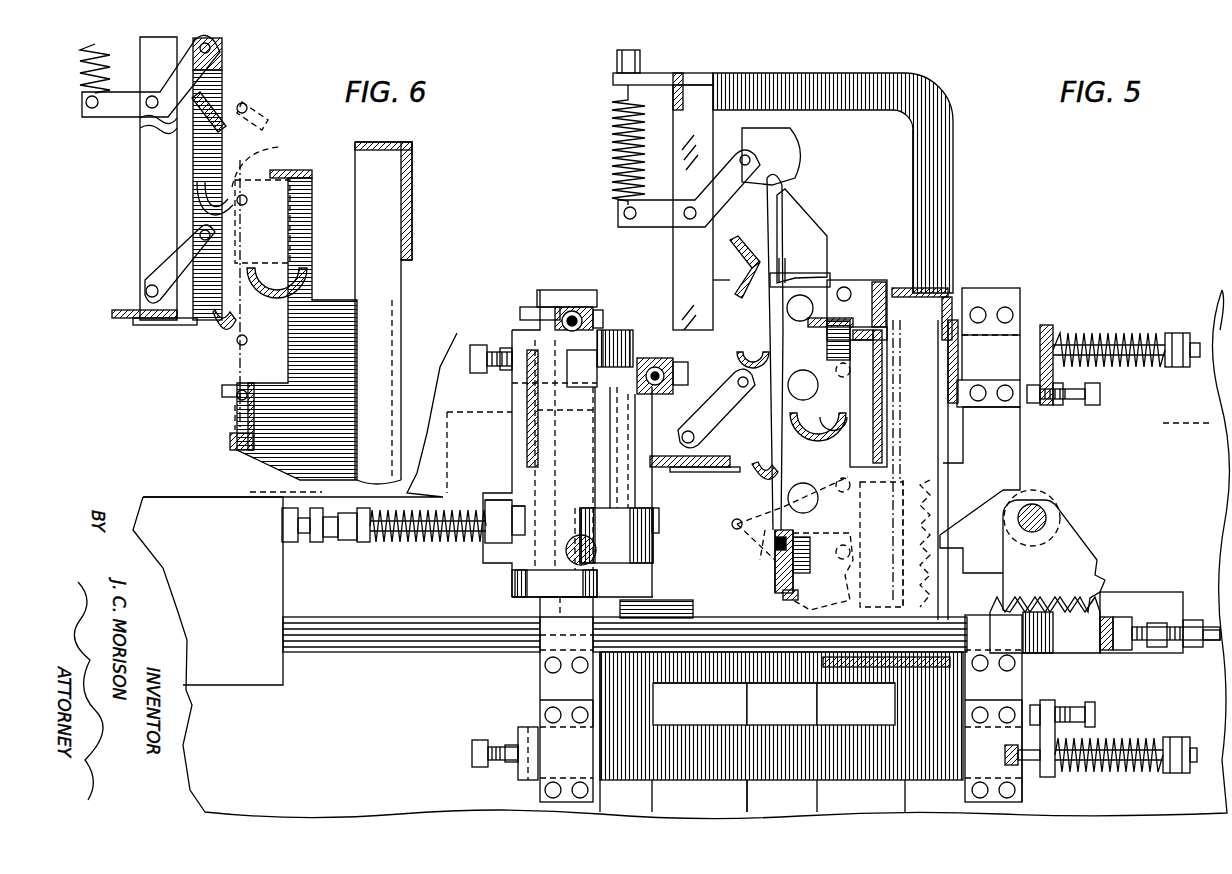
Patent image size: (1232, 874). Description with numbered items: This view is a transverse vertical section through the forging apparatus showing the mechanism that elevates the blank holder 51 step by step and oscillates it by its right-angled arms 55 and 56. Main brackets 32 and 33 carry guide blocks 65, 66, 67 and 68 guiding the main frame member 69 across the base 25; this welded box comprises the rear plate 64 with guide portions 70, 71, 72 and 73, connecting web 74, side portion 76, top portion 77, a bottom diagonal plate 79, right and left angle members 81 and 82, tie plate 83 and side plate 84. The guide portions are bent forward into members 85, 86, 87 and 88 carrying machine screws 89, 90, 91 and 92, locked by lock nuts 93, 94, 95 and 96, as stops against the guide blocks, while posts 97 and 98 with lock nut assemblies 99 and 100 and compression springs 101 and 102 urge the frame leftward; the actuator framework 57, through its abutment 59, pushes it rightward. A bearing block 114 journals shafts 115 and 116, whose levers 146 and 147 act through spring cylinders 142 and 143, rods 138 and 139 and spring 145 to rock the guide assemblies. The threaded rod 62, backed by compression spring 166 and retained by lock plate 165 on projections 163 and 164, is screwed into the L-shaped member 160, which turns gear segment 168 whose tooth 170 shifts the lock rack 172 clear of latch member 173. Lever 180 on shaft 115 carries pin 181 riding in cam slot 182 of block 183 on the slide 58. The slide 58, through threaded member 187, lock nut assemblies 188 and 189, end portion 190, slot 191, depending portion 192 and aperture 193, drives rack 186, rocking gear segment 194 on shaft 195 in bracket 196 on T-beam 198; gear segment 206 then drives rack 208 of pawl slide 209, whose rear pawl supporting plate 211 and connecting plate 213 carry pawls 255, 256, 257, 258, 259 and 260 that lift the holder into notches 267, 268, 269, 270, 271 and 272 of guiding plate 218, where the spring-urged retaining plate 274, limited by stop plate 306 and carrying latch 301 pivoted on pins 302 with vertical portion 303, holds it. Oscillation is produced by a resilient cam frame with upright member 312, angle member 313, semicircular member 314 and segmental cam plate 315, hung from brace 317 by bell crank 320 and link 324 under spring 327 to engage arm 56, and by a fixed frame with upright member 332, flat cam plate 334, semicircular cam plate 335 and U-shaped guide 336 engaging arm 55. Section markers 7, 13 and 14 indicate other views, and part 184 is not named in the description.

In FIG. 6, the section line 7 is at (250, 500).
In FIG. 5, the section line 7 is at (1212, 423).
In FIG. 5, the section line 13 is at (683, 520).
In FIG. 5, the section line 14 is at (676, 572).
In FIG. 5, the base 25 is at (1220, 300).
In FIG. 5, the main bracket 32 is at (1000, 290).
In FIG. 5, the main bracket 33 is at (545, 290).
In FIG. 6, the blank holder 51 is at (268, 135).
In FIG. 5, the blank holder 51 is at (782, 590).
In FIG. 6, the arm 55 is at (235, 418).
In FIG. 5, the arm 55 is at (786, 590).
In FIG. 6, the arm 56 is at (220, 388).
In FIG. 5, the arm 56 is at (775, 548).
In FIG. 5, the actuator framework 57 is at (250, 685).
In FIG. 5, the slide 58 is at (345, 652).
In FIG. 5, the abutment 59 is at (305, 543).
In FIG. 5, the threaded rod 62 is at (340, 540).
In FIG. 5, the main rear plate 64 is at (680, 775).
In FIG. 5, the guide block 65 is at (540, 300).
In FIG. 5, the guide block 66 is at (1010, 318).
In FIG. 5, the guide block 67 is at (550, 733).
In FIG. 5, the guide block 68 is at (1010, 770).
In FIG. 5, the main frame member 69 is at (812, 768).
In FIG. 5, the guide portion 70 is at (605, 770).
In FIG. 5, the guide portion 71 is at (960, 765).
In FIG. 5, the guide portion 72 is at (573, 429).
In FIG. 5, the guide portion 73 is at (965, 300).
In FIG. 5, the intermediate connecting web 74 is at (702, 680).
In FIG. 5, the side portion 76 is at (940, 212).
In FIG. 5, the top portion 77 is at (855, 110).
In FIG. 5, the bottom diagonally disposed plate 79 is at (868, 667).
In FIG. 6, the right hand angle member 81 is at (410, 180).
In FIG. 5, the right hand angle member 81 is at (930, 290).
In FIG. 5, the left-hand angle member 82 is at (697, 75).
In FIG. 6, the tie plate 83 is at (125, 322).
In FIG. 5, the tie plate 83 is at (660, 456).
In FIG. 5, the side plate 84 is at (527, 400).
In FIG. 5, the member 85 is at (520, 780).
In FIG. 5, the member 86 is at (1047, 700).
In FIG. 5, the member 87 is at (520, 325).
In FIG. 5, the member 88 is at (1050, 330).
In FIG. 5, the machine screw 89 is at (472, 752).
In FIG. 5, the machine screw 90 is at (1095, 713).
In FIG. 5, the machine screw 91 is at (478, 373).
In FIG. 5, the machine screw 92 is at (1100, 395).
In FIG. 5, the lock nut 93 is at (505, 765).
In FIG. 5, the lock nut 94 is at (1065, 705).
In FIG. 5, the lock nut 95 is at (506, 370).
In FIG. 5, the lock nut 96 is at (1057, 405).
In FIG. 5, the post 97 is at (1030, 330).
In FIG. 5, the post 98 is at (1030, 765).
In FIG. 5, the lock nut assembly 99 is at (1183, 330).
In FIG. 5, the lock nut assembly 100 is at (1178, 773).
In FIG. 5, the compression spring 101 is at (1125, 330).
In FIG. 5, the compression spring 102 is at (1100, 772).
In FIG. 5, the bearing block 114 is at (527, 462).
In FIG. 5, the shaft 115 is at (527, 428).
In FIG. 5, the shaft 116 is at (608, 453).
In FIG. 5, the rod 138 is at (575, 305).
In FIG. 5, the rod 139 is at (655, 358).
In FIG. 5, the spring supporting cylinder 142 is at (572, 307).
In FIG. 5, the spring supporting cylinder 143 is at (635, 330).
In FIG. 5, the spring 145 is at (640, 330).
In FIG. 5, the lever 146 is at (525, 305).
In FIG. 5, the lever 147 is at (620, 330).
In FIG. 5, the L-shaped member 160 is at (655, 530).
In FIG. 5, the guide projection 163 is at (505, 500).
In FIG. 5, the guide projection 164 is at (500, 535).
In FIG. 5, the lock plate 165 is at (490, 535).
In FIG. 5, the compression spring 166 is at (415, 545).
In FIG. 5, the gear segment 168 is at (650, 552).
In FIG. 5, the tooth 170 is at (586, 533).
In FIG. 5, the lock rack 172 is at (590, 535).
In FIG. 5, the latch member 173 is at (566, 538).
In FIG. 5, the lever 180 is at (520, 592).
In FIG. 5, the pin 181 is at (566, 646).
In FIG. 5, the cam slot 182 is at (575, 620).
In FIG. 5, the block 183 is at (693, 606).
In FIG. 5, the bracket 184 is at (540, 682).
In FIG. 5, the rack 186 is at (1147, 592).
In FIG. 5, the threaded member 187 is at (1190, 650).
In FIG. 5, the lock nut assembly 188 is at (1140, 650).
In FIG. 5, the lock nut assembly 189 is at (1205, 628).
In FIG. 5, the end portion 190 is at (1120, 596).
In FIG. 5, the slot 191 is at (1090, 600).
In FIG. 5, the downwardly extending portion 192 is at (1168, 620).
In FIG. 5, the aperture 193 is at (1166, 650).
In FIG. 5, the gear segment 194 is at (1072, 540).
In FIG. 5, the shaft 195 is at (1040, 510).
In FIG. 5, the bracket 196 is at (1005, 500).
In FIG. 6, the T-beam 198 is at (380, 272).
In FIG. 5, the T-beam 198 is at (918, 423).
In FIG. 5, the gear segment 206 is at (975, 490).
In FIG. 5, the rack 208 is at (916, 529).
In FIG. 5, the pawl slide 209 is at (858, 278).
In FIG. 5, the rear pawl supporting plate 211 is at (855, 282).
In FIG. 5, the connecting plate 213 is at (888, 322).
In FIG. 5, the pawl slide guiding plate 218 is at (790, 210).
In FIG. 5, the pawl 255 is at (795, 276).
In FIG. 5, the pawl 256 is at (772, 352).
In FIG. 5, the pawl 257 is at (818, 427).
In FIG. 5, the pawl 258 is at (835, 520).
In FIG. 5, the pawl 259 is at (800, 540).
In FIG. 5, the pawl 260 is at (800, 595).
In FIG. 5, the notch 267 is at (775, 575).
In FIG. 5, the notch 268 is at (765, 490).
In FIG. 5, the notch 269 is at (805, 482).
In FIG. 5, the notch 270 is at (750, 408).
In FIG. 5, the notch 271 is at (804, 308).
In FIG. 5, the notch 272 is at (787, 260).
In FIG. 5, the retaining plate 274 is at (775, 140).
In FIG. 5, the latch 301 is at (760, 540).
In FIG. 5, the pin 302 is at (732, 525).
In FIG. 5, the vertically extending portion 303 is at (735, 522).
In FIG. 5, the stop plate 306 is at (720, 278).
In FIG. 5, the upright member 312 is at (784, 182).
In FIG. 6, the angle member 313 is at (222, 120).
In FIG. 5, the angle member 313 is at (730, 243).
In FIG. 6, the semicircular member 314 is at (200, 212).
In FIG. 5, the semicircular member 314 is at (682, 372).
In FIG. 6, the segmental cam plate 315 is at (215, 322).
In FIG. 5, the segmental cam plate 315 is at (755, 476).
In FIG. 6, the brace 317 is at (148, 183).
In FIG. 5, the brace 317 is at (695, 120).
In FIG. 6, the bell crank 320 is at (168, 84).
In FIG. 5, the bell crank 320 is at (705, 186).
In FIG. 6, the link 324 is at (165, 268).
In FIG. 6, the spring 327 is at (88, 92).
In FIG. 5, the spring 327 is at (607, 142).
In FIG. 6, the upright member 332 is at (325, 335).
In FIG. 5, the upright member 332 is at (845, 400).
In FIG. 6, the flat top cam plate 334 is at (300, 172).
In FIG. 5, the flat top cam plate 334 is at (848, 277).
In FIG. 6, the semi-circular cam plate 335 is at (300, 278).
In FIG. 5, the semi-circular cam plate 335 is at (850, 432).
In FIG. 6, the U-shaped guide 336 is at (230, 443).
In FIG. 5, the U-shaped guide 336 is at (783, 600).